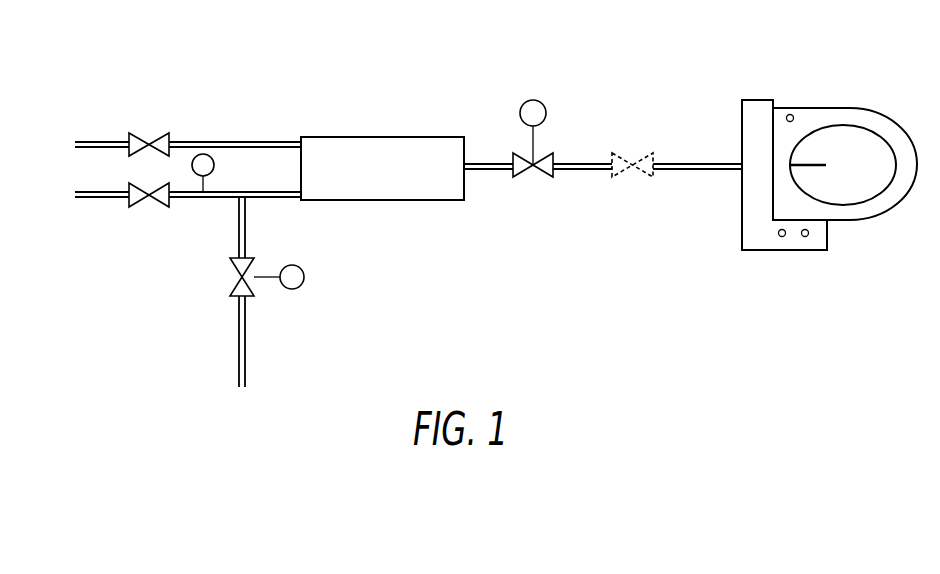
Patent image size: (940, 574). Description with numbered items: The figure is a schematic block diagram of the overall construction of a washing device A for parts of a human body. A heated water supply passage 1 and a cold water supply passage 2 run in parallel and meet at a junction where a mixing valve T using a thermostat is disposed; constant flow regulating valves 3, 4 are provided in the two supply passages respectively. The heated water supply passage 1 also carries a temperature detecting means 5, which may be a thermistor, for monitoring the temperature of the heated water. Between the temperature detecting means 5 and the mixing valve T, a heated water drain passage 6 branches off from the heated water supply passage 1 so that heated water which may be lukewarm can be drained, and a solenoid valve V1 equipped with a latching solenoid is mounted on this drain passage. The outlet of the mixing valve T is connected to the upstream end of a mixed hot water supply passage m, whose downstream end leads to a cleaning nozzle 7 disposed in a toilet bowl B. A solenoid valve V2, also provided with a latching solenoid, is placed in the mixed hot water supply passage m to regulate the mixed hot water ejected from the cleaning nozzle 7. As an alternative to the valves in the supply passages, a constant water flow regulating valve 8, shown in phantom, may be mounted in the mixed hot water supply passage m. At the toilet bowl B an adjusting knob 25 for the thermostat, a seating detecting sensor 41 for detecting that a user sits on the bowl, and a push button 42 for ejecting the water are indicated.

The heated water supply passage 1 is at (111, 203).
The cold water supply passage 2 is at (103, 141).
The constant flow regulating valve 3 is at (160, 207).
The constant flow regulating valve 4 is at (158, 136).
The temperature detecting means 5 is at (214, 167).
The heated water drain passage 6 is at (238, 330).
The cleaning nozzle 7 is at (828, 165).
The constant water flow regulating valve 8 is at (624, 180).
The adjusting knob 25 is at (781, 238).
The seating detecting sensor 41 is at (790, 114).
The push button 42 is at (807, 238).
The mixing valve T is at (389, 136).
The mixed hot water supply passage m is at (490, 173).
The washing device A is at (539, 78).
The solenoid valve V1 is at (220, 277).
The solenoid valve V2 is at (550, 144).
The toilet bowl B is at (841, 108).